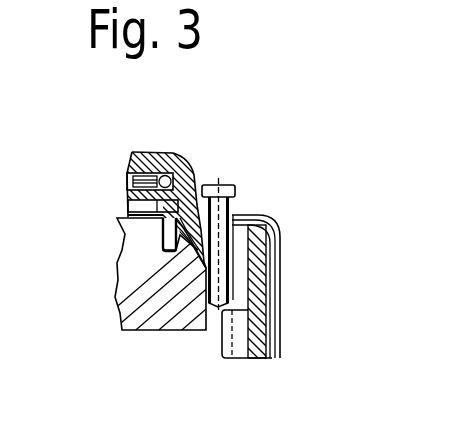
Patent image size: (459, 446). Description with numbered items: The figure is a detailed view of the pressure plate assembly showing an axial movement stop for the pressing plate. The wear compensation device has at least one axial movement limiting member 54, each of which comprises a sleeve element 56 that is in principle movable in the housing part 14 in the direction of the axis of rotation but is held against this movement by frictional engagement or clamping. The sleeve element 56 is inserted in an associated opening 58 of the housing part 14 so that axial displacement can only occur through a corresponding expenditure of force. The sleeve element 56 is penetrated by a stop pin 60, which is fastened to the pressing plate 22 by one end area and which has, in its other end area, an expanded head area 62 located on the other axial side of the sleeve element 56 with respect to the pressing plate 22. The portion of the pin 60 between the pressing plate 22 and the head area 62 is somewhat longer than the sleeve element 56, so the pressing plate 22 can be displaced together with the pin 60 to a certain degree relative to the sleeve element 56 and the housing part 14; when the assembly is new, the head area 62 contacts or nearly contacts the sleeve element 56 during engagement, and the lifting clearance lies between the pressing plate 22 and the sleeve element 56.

The housing part 14 is at (282, 327).
The pressing plate 22 is at (117, 298).
The axial movement limiting member 54 is at (280, 234).
The sleeve element 56 is at (237, 207).
The opening 58 is at (267, 215).
The stop pin 60 is at (120, 243).
The expanded head area 62 is at (210, 186).